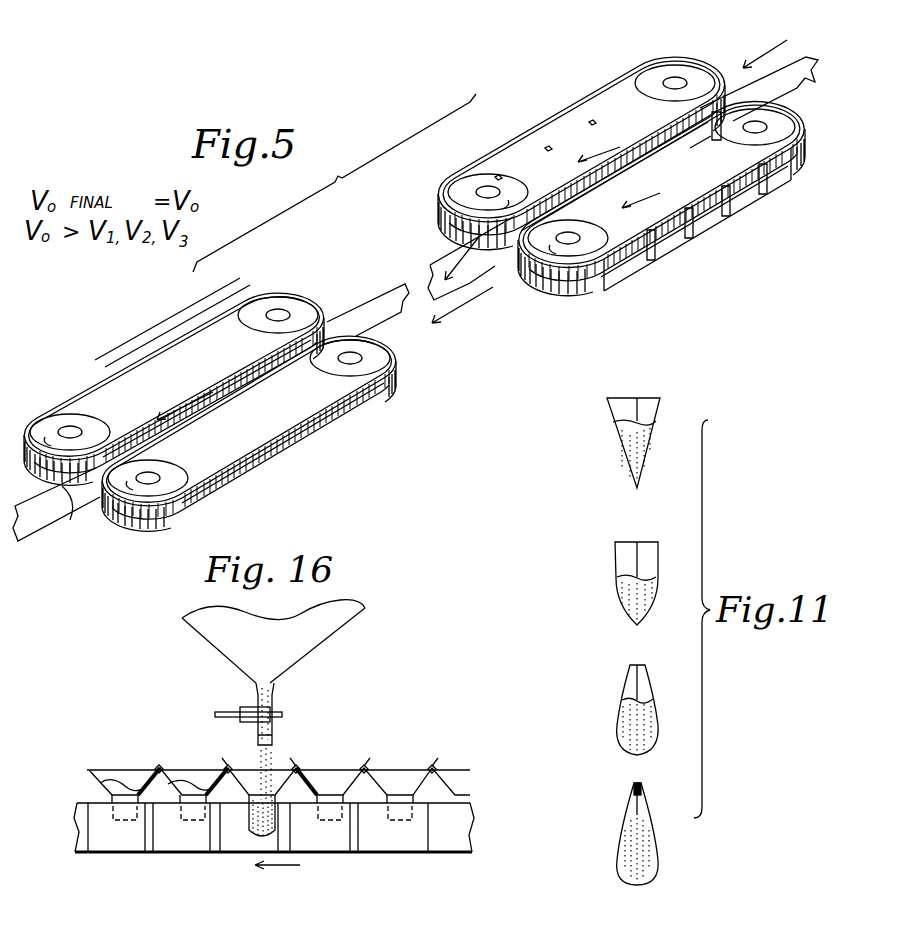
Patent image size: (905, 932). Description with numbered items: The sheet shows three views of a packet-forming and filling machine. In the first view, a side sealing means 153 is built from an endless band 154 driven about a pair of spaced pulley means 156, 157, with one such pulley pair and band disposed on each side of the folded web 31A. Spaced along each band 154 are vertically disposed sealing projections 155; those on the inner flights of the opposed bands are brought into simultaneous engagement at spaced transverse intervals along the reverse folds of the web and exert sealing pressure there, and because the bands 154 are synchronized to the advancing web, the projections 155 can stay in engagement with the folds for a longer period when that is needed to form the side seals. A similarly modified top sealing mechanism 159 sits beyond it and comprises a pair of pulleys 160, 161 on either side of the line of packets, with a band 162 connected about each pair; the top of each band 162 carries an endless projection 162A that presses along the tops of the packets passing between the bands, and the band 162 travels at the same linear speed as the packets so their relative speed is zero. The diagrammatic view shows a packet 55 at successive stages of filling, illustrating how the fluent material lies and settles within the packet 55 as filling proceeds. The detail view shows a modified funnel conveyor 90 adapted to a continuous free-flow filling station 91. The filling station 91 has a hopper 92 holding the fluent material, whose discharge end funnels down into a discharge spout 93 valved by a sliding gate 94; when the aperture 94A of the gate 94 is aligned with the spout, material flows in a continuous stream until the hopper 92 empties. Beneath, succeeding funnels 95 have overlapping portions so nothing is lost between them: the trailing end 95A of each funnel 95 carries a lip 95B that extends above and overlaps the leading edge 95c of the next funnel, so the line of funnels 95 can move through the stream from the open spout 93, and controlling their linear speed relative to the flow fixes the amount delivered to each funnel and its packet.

In FIG. 5, the side sealing means 153 is at (692, 268).
In FIG. 5, the endless band 154 is at (582, 127).
In FIG. 5, the sealing projections 155 is at (593, 88).
In FIG. 5, the pulley means 156 is at (672, 70).
In FIG. 5, the pulley means 157 is at (487, 176).
In FIG. 5, the top sealing mechanism 159 is at (339, 459).
In FIG. 5, the pulley 160 is at (300, 307).
In FIG. 5, the pulley 161 is at (55, 422).
In FIG. 5, the band 162 is at (200, 334).
In FIG. 5, the endless projection 162A is at (135, 348).
In FIG. 5, the folded web 31A is at (795, 43).
In FIG. 11, the folded web 31A is at (625, 452).
In FIG. 5, the packet 55 is at (382, 295).
In FIG. 16, the packet 55 is at (455, 832).
In FIG. 11, the packet 55 is at (615, 852).
In FIG. 16, the funnel conveyor 90 is at (472, 772).
In FIG. 16, the filling station 91 is at (278, 630).
In FIG. 16, the hopper 92 is at (338, 610).
In FIG. 16, the discharge spout 93 is at (273, 728).
In FIG. 16, the sliding gate 94 is at (268, 716).
In FIG. 16, the aperture 94A is at (277, 703).
In FIG. 16, the funnel 95 is at (307, 811).
In FIG. 16, the trailing end 95A is at (236, 770).
In FIG. 16, the lip 95B is at (318, 770).
In FIG. 16, the leading edge 95c is at (199, 876).